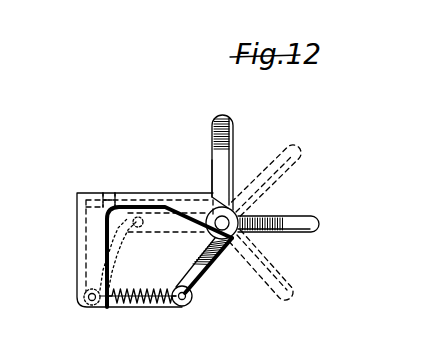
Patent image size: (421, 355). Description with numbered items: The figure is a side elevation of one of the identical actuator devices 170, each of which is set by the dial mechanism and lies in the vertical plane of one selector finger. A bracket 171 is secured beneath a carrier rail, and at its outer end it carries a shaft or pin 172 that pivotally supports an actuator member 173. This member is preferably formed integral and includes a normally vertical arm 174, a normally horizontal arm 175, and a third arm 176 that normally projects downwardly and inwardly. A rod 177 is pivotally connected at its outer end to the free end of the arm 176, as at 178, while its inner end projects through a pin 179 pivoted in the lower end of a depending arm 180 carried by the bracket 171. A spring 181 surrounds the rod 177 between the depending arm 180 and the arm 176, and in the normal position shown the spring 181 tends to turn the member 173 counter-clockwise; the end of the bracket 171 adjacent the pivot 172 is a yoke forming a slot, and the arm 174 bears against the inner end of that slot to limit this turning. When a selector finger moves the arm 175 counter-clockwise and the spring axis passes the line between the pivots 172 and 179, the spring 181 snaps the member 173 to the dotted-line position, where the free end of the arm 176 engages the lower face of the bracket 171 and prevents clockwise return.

The actuator device 170 is at (156, 190).
The bracket 171 is at (95, 193).
The shaft or pin 172 is at (236, 246).
The actuator member 173 is at (209, 178).
The vertical arm 174 is at (231, 162).
The horizontal arm 175 is at (300, 216).
The third arm 176 is at (205, 283).
The rod 177 is at (147, 290).
The pivotal connection 178 is at (181, 306).
The pin 179 is at (95, 305).
The depending arm 180 is at (77, 252).
The spring 181 is at (147, 306).